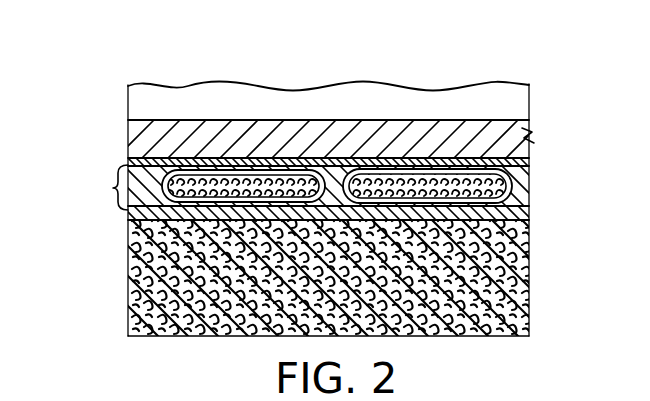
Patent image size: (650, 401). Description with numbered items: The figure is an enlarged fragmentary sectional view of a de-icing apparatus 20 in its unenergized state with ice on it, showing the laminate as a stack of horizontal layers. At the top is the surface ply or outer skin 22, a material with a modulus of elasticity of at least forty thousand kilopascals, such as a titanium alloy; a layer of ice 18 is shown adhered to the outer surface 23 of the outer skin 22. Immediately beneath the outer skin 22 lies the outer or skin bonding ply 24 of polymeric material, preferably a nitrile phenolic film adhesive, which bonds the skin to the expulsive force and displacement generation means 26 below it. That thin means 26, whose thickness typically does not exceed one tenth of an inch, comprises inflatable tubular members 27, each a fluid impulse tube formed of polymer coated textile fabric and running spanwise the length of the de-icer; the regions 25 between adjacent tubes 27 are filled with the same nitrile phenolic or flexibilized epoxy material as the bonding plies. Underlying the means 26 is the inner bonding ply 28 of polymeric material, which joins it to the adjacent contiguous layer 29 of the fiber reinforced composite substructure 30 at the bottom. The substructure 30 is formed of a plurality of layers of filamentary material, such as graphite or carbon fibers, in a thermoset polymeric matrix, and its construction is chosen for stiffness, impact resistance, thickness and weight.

The layer of ice 18 is at (298, 90).
The de-icing apparatus 20 is at (544, 114).
The outer skin 22 is at (128, 128).
The outer surface 23 is at (495, 127).
The outer bonding ply 24 is at (128, 159).
The regions between adjacent tubes 25 is at (337, 183).
The expulsive force and displacement generation means 26 is at (110, 188).
The inflatable tubular member 27 is at (246, 172).
The inner bonding ply 28 is at (124, 220).
The adjacent contiguous layer 29 is at (128, 238).
The fiber reinforced composite substructure 30 is at (128, 298).